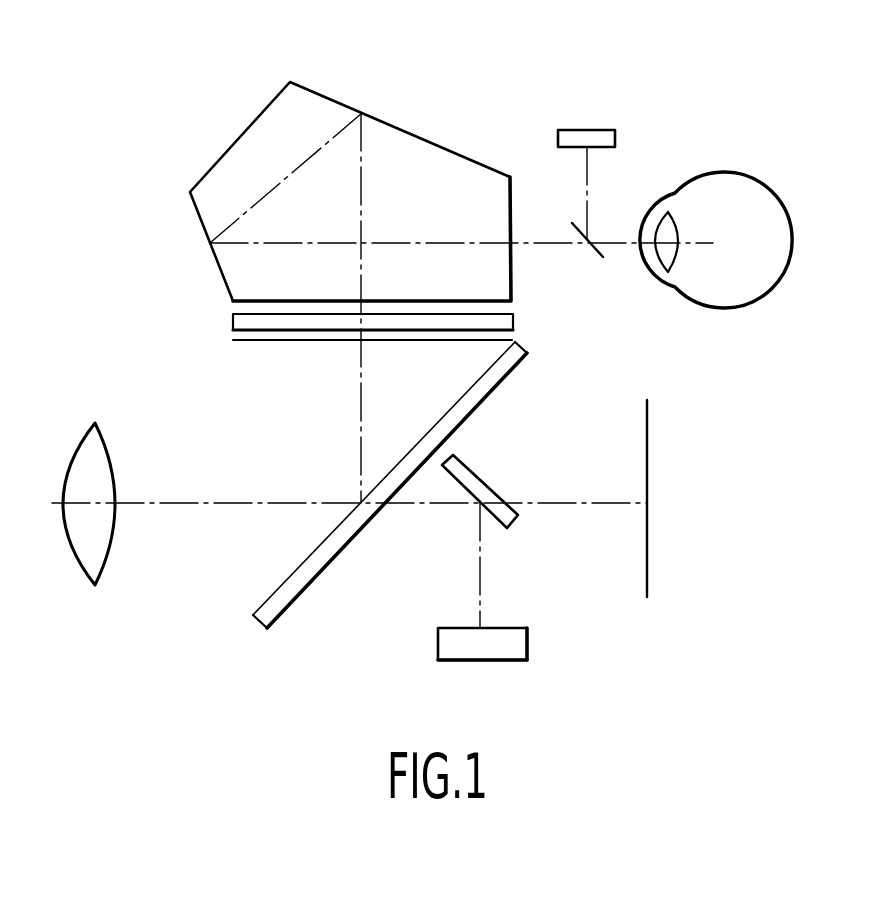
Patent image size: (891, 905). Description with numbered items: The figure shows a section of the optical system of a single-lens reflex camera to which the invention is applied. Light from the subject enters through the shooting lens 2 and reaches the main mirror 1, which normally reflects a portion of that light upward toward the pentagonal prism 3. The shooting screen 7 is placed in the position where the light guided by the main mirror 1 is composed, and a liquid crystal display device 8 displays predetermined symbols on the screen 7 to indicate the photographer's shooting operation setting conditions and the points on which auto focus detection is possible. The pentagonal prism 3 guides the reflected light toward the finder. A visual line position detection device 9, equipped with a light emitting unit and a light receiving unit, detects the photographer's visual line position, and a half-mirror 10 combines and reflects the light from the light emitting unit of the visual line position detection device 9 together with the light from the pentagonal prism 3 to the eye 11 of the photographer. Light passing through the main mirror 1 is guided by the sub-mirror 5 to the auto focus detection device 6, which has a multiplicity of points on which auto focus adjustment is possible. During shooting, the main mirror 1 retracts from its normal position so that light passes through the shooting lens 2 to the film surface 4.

The main mirror 1 is at (383, 503).
The shooting lens 2 is at (113, 547).
The pentagonal prism 3 is at (247, 130).
The film surface 4 is at (653, 503).
The sub-mirror 5 is at (483, 477).
The auto focus detection device 6 is at (527, 655).
The shooting screen 7 is at (233, 322).
The liquid crystal display device 8 is at (283, 341).
The visual line position detection device 9 is at (588, 130).
The half-mirror 10 is at (588, 242).
The eye 11 is at (793, 227).